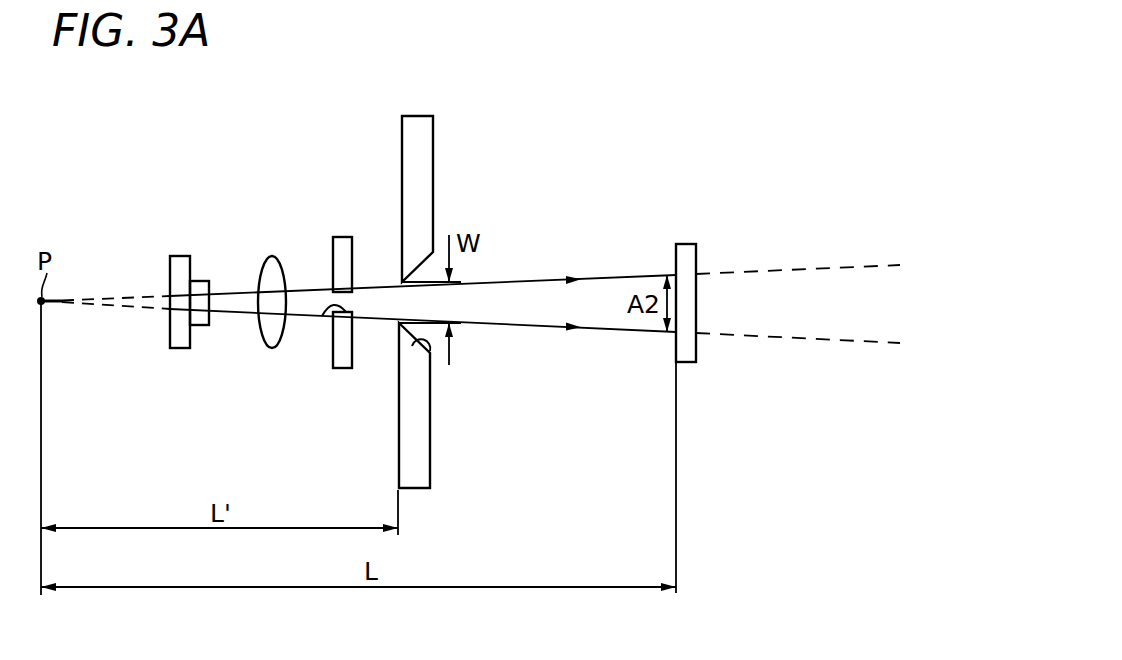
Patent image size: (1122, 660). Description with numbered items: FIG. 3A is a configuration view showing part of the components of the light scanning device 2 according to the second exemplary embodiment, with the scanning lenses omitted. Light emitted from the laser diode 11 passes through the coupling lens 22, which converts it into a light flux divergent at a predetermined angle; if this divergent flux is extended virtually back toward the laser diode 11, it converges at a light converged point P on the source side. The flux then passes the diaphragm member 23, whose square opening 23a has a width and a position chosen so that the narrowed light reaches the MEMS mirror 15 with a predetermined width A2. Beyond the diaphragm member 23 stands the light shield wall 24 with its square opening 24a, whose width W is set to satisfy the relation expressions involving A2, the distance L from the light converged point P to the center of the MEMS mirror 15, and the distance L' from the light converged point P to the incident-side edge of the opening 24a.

The light scanning device 2 is at (588, 156).
The laser diode 11 is at (182, 256).
The MEMS mirror 15 is at (687, 244).
The coupling lens 22 is at (270, 257).
The diaphragm member 23 is at (343, 237).
The opening 23a is at (326, 318).
The light shield wall 24 is at (433, 168).
The opening 24a is at (418, 343).